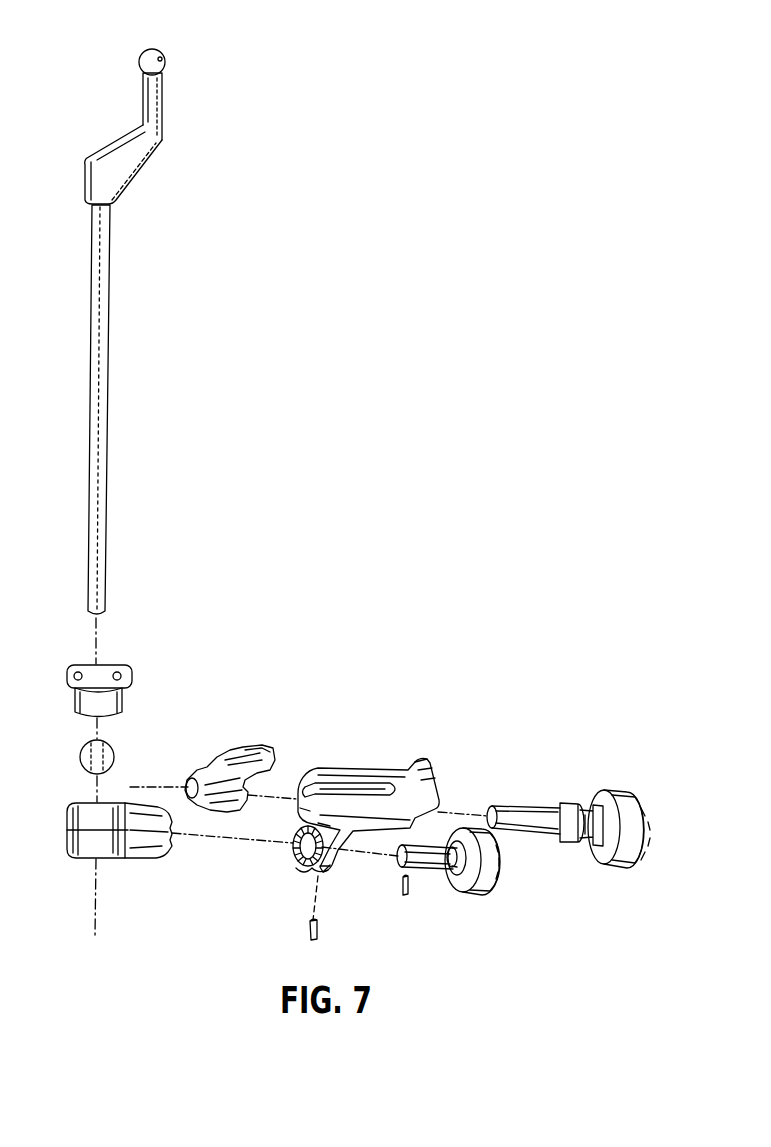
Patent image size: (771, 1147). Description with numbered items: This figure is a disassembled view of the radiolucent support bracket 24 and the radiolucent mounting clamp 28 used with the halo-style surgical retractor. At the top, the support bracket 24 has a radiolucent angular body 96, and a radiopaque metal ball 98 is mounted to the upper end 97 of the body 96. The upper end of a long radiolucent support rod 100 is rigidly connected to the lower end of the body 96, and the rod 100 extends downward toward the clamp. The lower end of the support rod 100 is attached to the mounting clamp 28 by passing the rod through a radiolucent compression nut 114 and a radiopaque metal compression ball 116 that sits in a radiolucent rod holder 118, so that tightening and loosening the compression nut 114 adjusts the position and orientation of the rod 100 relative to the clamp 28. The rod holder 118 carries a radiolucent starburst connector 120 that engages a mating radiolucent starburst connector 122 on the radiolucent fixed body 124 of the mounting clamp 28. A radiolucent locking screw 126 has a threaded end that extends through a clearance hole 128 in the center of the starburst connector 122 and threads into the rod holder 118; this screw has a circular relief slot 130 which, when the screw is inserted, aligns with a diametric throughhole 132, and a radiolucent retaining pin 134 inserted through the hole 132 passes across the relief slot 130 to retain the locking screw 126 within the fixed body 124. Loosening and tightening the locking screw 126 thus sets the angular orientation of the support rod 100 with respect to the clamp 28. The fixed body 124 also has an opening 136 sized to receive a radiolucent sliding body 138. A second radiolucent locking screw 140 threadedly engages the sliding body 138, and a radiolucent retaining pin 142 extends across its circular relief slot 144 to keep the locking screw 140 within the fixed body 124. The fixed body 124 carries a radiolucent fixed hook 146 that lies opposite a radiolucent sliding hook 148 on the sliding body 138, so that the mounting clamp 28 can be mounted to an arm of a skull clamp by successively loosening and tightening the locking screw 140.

The support bracket 24 is at (112, 129).
The mounting clamp 28 is at (448, 683).
The angular body 96 is at (138, 173).
The upper end 97 is at (163, 100).
The metal ball 98 is at (157, 48).
The support rod 100 is at (106, 397).
The compression nut 114 is at (67, 680).
The compression ball 116 is at (80, 755).
The rod holder 118 is at (67, 822).
The starburst connector 120 is at (172, 856).
The starburst connector 122 is at (303, 870).
The fixed body 124 is at (342, 767).
The locking screw 126 is at (477, 897).
The clearance hole 128 is at (295, 838).
The relief slot 130 is at (455, 890).
The diametric throughhole 132 is at (322, 872).
The retaining pin 134 is at (308, 937).
The opening 136 is at (295, 797).
The sliding body 138 is at (185, 782).
The locking screw 140 is at (620, 870).
The retaining pin 142 is at (395, 894).
The relief slot 144 is at (587, 842).
The fixed hook 146 is at (413, 764).
The sliding hook 148 is at (273, 753).